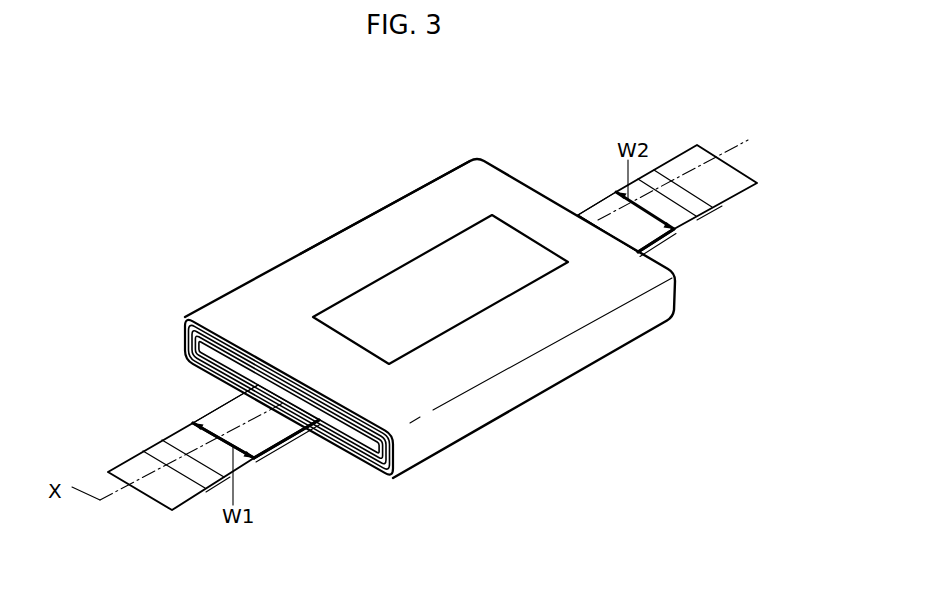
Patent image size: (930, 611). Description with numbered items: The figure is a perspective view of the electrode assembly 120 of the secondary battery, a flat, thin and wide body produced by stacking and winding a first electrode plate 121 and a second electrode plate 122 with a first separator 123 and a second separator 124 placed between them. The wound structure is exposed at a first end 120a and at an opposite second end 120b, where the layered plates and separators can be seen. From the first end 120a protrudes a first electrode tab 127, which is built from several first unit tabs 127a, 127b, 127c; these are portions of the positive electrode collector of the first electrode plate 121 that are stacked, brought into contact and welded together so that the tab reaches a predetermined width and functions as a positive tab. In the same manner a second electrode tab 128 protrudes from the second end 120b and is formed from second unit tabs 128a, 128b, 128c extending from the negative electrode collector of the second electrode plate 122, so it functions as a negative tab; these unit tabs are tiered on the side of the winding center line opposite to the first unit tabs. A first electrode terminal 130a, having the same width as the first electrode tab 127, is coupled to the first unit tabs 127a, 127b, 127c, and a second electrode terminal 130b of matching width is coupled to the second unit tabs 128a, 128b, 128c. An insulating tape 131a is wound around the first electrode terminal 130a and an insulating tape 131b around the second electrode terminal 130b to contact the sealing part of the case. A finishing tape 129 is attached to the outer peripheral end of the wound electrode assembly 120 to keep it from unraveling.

The electrode assembly 120 is at (286, 245).
The first end 120a is at (197, 343).
The second end 120b is at (500, 163).
The first electrode plate 121 is at (386, 479).
The second electrode plate 122 is at (393, 458).
The first separator 123 is at (397, 446).
The second separator 124 is at (391, 471).
The first electrode tab 127 is at (203, 416).
The first unit tab 127a is at (281, 434).
The first unit tab 127b is at (280, 462).
The first unit tab 127c is at (220, 403).
The second electrode tab 128 is at (603, 203).
The second unit tab 128a is at (636, 230).
The second unit tab 128b is at (683, 230).
The second unit tab 128c is at (578, 208).
The finishing tape 129 is at (452, 313).
The first electrode terminal 130a is at (116, 470).
The second electrode terminal 130b is at (702, 212).
The insulating tape 131a is at (150, 445).
The insulating tape 131b is at (646, 168).